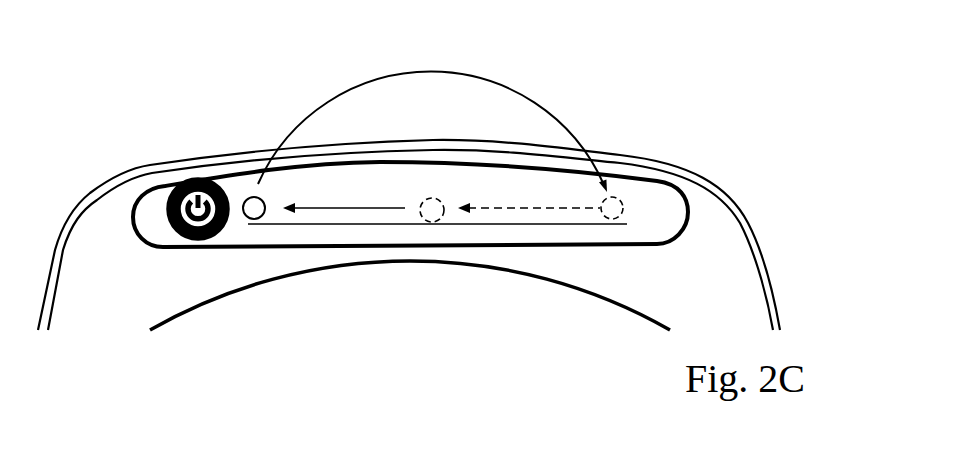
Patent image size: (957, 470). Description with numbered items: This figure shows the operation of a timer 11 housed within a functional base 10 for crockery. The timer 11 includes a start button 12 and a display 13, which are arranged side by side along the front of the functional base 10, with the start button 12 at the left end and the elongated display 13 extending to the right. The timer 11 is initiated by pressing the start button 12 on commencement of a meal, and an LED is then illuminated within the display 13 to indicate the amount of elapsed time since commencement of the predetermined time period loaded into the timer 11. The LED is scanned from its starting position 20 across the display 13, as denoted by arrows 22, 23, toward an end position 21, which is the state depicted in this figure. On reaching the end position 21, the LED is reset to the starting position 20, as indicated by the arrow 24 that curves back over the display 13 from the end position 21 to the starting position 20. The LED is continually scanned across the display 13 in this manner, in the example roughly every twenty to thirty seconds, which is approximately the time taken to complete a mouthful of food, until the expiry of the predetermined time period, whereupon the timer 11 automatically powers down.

The functional base 10 is at (734, 261).
The timer 11 is at (430, 248).
The start button 12 is at (173, 188).
The display 13 is at (312, 188).
The starting position 20 is at (623, 208).
The end position 21 is at (247, 228).
The arrow 22 is at (529, 197).
The arrow 23 is at (363, 201).
The arrow 24 is at (432, 119).